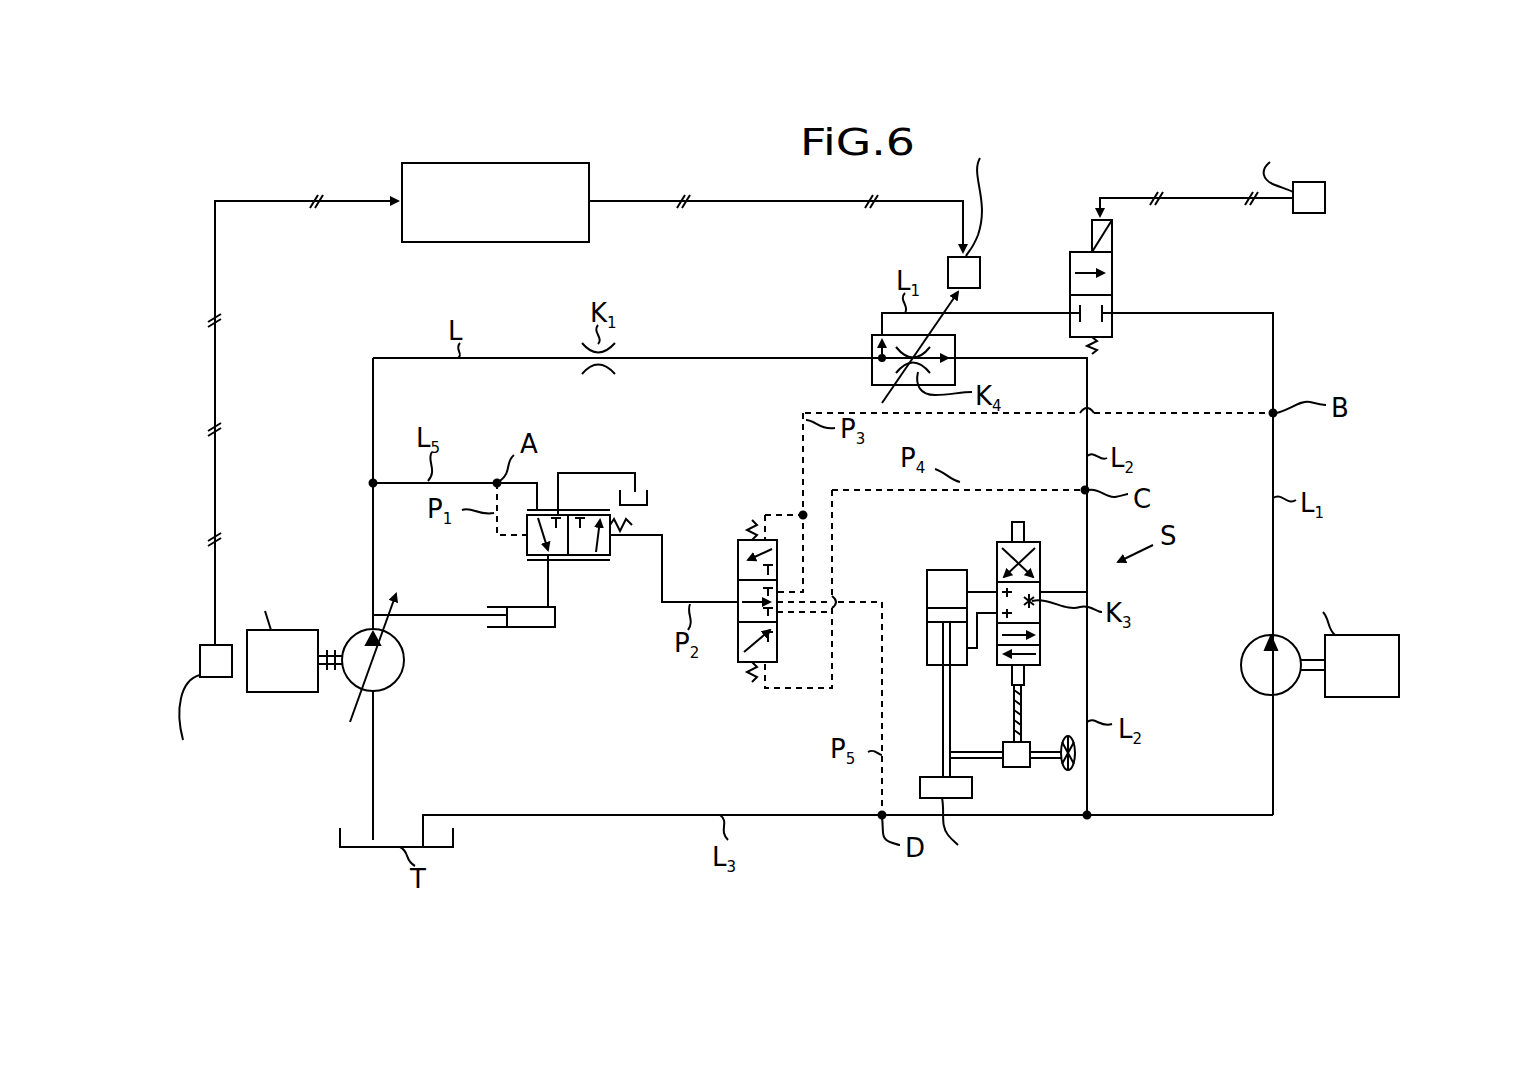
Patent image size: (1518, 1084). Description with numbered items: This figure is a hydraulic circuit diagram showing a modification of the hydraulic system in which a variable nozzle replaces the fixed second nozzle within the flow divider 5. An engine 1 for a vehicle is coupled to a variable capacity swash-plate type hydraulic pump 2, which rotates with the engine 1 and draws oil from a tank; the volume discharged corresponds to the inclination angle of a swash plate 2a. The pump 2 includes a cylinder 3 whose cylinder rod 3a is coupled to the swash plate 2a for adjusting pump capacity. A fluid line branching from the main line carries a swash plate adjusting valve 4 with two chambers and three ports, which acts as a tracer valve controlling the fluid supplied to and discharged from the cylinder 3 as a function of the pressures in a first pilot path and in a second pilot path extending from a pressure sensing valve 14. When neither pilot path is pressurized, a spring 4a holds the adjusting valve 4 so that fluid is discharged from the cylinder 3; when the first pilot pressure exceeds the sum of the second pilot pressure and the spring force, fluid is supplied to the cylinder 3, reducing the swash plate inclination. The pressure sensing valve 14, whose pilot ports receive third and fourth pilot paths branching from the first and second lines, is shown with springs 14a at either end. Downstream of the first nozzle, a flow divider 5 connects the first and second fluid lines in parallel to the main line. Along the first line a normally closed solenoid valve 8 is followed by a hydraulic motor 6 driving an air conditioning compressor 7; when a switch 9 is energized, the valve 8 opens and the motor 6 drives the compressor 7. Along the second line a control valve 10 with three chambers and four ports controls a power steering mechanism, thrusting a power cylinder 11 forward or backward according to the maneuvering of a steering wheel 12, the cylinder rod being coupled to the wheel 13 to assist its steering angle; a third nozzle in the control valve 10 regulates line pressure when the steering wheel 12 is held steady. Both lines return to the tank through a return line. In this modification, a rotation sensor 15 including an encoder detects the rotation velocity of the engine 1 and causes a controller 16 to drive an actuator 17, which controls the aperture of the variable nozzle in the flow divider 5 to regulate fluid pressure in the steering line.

The engine 1 is at (280, 692).
The variable capacity swash-plate type hydraulic pump 2 is at (386, 683).
The swash plate 2a is at (400, 596).
The cylinder 3 is at (540, 627).
The cylinder rod 3a is at (448, 615).
The swash plate adjusting valve 4 is at (578, 548).
The spring 4a is at (632, 525).
The flow divider 5 is at (872, 372).
The hydraulic motor 6 is at (1241, 668).
The air conditioning compressor 7 is at (1365, 697).
The solenoid valve 8 is at (1112, 300).
The switch 9 is at (1309, 213).
The control valve 10 is at (1005, 545).
The power cylinder 11 is at (927, 595).
The steering wheel 12 is at (1068, 771).
The wheel 13 is at (954, 788).
The pressure sensing valve 14 is at (736, 596).
The springs of valve 14 14a is at (752, 520).
The rotation sensor 15 is at (218, 677).
The controller 16 is at (589, 232).
The actuator 17 is at (980, 275).